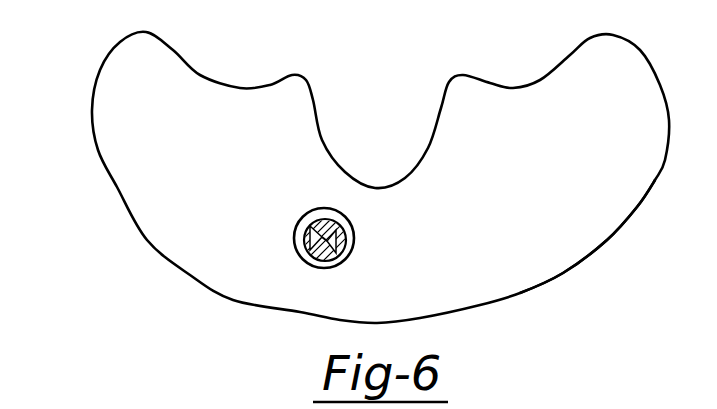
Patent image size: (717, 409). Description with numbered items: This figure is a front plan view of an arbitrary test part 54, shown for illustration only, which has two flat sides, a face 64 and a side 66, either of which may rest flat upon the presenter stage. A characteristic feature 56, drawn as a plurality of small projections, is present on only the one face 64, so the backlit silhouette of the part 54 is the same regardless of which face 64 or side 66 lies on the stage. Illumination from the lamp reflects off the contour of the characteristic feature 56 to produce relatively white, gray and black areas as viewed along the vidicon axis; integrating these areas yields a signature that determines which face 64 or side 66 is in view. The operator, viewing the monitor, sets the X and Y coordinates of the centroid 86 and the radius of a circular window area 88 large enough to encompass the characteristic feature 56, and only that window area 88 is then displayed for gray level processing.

The arbitrary test part 54 is at (528, 102).
The characteristic feature 56 is at (295, 233).
The face 64 is at (623, 205).
The side 66 is at (560, 266).
The centroid 86 is at (352, 248).
The window area 88 is at (350, 230).